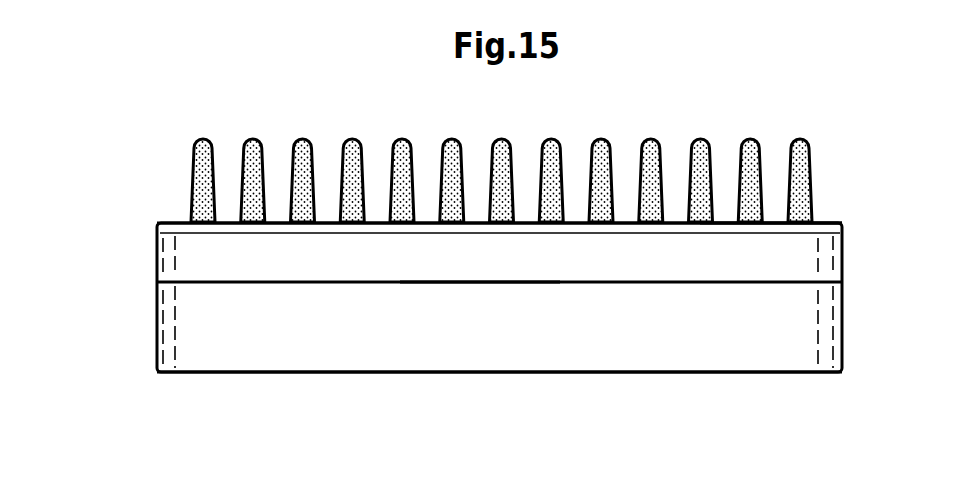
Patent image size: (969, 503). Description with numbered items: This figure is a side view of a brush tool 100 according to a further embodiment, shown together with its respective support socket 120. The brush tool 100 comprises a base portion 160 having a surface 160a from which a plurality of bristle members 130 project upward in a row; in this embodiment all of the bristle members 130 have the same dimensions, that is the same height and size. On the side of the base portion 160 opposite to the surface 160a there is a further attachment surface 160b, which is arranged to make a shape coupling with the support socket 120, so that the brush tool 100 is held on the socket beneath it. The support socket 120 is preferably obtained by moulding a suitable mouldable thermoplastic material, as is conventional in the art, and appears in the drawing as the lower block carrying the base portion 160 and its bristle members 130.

The brush tool 100 is at (158, 163).
The support socket 120 is at (232, 342).
The bristle members 130 is at (303, 167).
The base portion 160 is at (637, 262).
The surface 160a is at (830, 218).
The attachment surface 160b is at (477, 283).